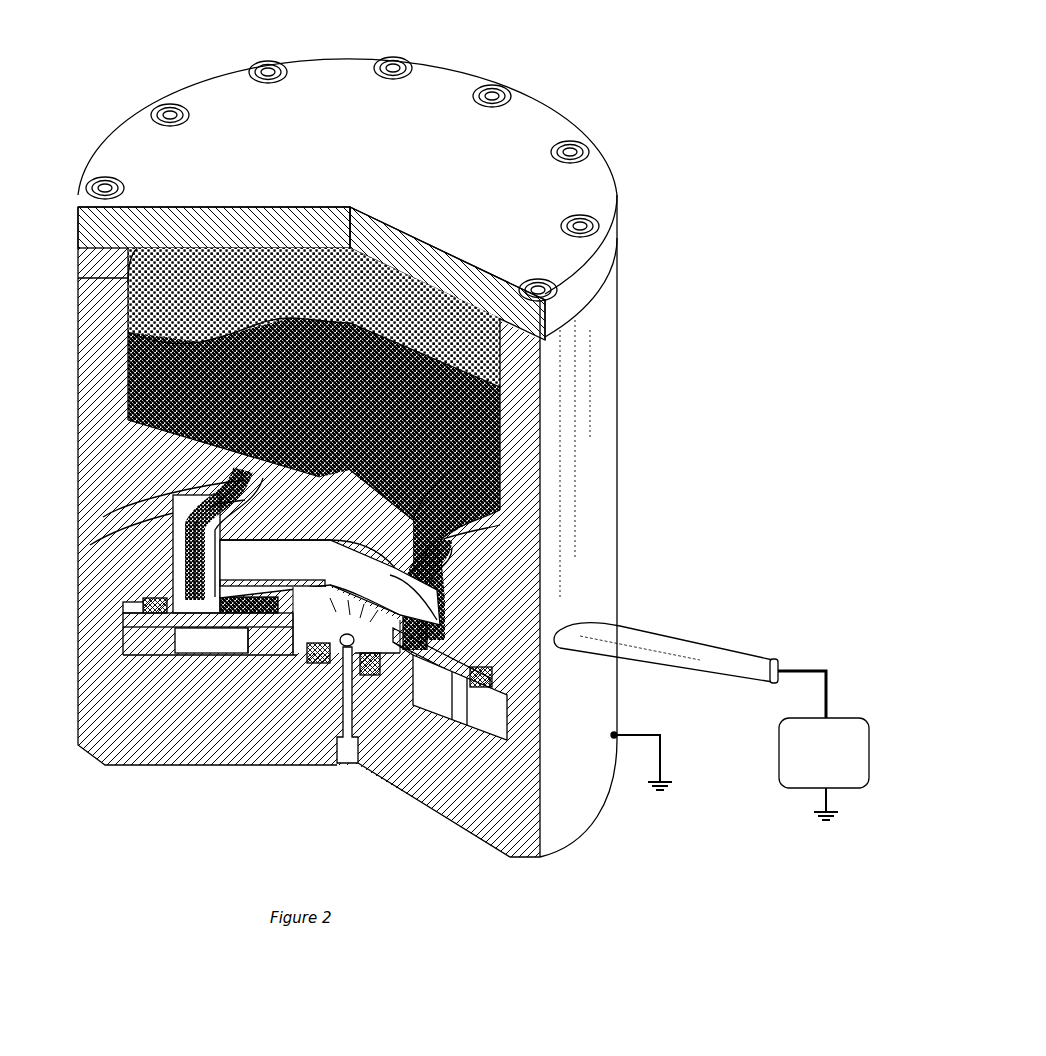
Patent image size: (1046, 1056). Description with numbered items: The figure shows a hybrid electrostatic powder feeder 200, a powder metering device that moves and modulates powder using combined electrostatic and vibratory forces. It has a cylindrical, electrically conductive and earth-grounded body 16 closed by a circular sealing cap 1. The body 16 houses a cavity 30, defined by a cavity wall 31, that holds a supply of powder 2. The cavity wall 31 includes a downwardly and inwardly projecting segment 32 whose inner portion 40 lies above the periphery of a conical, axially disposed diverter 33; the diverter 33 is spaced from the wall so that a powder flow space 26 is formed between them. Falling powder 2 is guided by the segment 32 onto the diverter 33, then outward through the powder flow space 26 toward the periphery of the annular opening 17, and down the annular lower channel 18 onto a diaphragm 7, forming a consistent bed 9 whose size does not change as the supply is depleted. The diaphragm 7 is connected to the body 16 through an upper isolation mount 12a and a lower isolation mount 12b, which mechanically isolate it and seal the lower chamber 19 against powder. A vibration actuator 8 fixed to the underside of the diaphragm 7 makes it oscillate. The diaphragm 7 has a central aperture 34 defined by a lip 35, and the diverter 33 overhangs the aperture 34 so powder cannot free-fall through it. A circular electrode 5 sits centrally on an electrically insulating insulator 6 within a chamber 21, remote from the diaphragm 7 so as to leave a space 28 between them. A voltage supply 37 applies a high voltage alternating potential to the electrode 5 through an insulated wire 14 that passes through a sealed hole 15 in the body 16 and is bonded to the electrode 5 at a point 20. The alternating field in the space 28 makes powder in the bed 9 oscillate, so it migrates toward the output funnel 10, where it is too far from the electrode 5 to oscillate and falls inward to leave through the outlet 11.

The hybrid electrostatic powder feeder 200 is at (553, 75).
The cap 1 is at (130, 130).
The powder 2 is at (320, 470).
The electrode 5 is at (265, 552).
The insulator 6 is at (240, 582).
The diaphragm 7 is at (430, 712).
The vibration actuator 8 is at (203, 640).
The bed 9 is at (265, 612).
The output funnel 10 is at (318, 660).
The outlet 11 is at (345, 755).
The upper isolation mount 12a is at (210, 615).
The lower isolation mount 12b is at (365, 680).
The wire 14 is at (678, 648).
The sealed hole 15 is at (560, 633).
The body 16 is at (600, 395).
The annular opening 17 is at (415, 503).
The lower channel 18 is at (455, 645).
The lower chamber 19 is at (480, 725).
The point 20 is at (180, 533).
The chamber 21 is at (445, 475).
The powder flow space 26 is at (245, 500).
The space 28 is at (480, 665).
The cavity 30 is at (380, 390).
The cavity wall 31 is at (135, 275).
The downwardly and inwardly projecting segment 32 is at (245, 480).
The diverter 33 is at (330, 485).
The aperture 34 is at (295, 625).
The lip 35 is at (390, 690).
The voltage supply 37 is at (838, 716).
The inner portion 40 is at (440, 540).